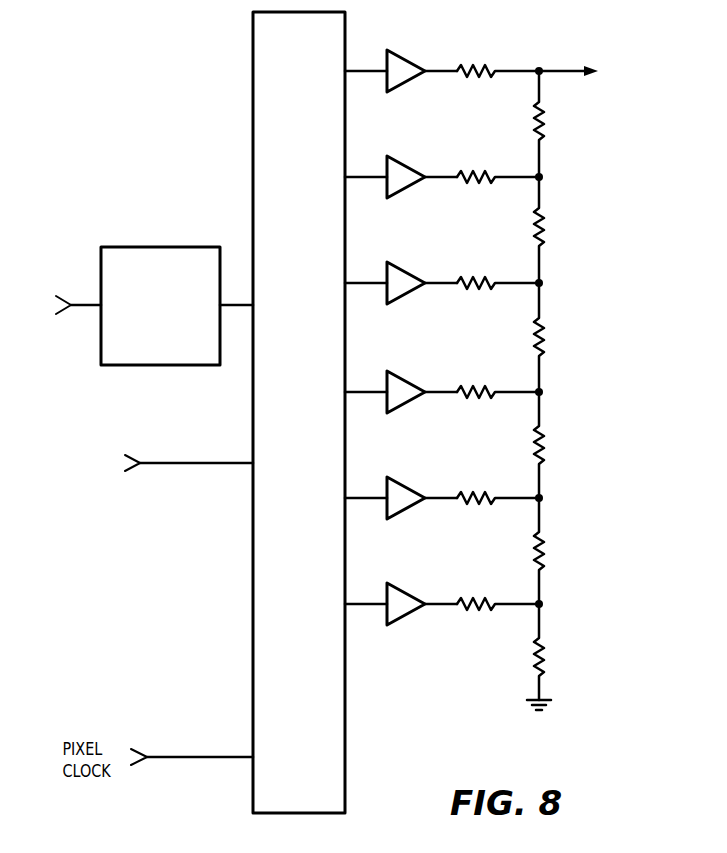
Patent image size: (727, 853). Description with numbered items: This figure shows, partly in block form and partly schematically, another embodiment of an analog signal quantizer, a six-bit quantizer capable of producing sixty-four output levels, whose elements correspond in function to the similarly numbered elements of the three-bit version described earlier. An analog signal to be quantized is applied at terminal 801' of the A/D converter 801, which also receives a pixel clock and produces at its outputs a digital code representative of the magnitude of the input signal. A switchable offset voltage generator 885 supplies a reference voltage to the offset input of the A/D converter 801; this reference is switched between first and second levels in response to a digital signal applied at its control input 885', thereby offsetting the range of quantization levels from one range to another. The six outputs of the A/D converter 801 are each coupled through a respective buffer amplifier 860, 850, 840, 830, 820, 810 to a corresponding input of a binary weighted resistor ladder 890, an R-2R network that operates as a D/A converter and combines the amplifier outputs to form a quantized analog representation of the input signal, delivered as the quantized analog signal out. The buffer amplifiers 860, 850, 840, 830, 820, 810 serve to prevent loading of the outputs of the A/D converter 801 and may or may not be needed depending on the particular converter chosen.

The A/D converter 801 is at (261, 412).
The analog signal input terminal 801' is at (154, 469).
The switchable offset voltage generator 885 is at (177, 329).
The control input 885' is at (65, 307).
The buffer amplifier 860 is at (404, 83).
The buffer amplifier 850 is at (404, 189).
The buffer amplifier 840 is at (404, 295).
The buffer amplifier 830 is at (404, 404).
The buffer amplifier 820 is at (404, 510).
The buffer amplifier 810 is at (406, 616).
The binary weighted resistor ladder 890 is at (478, 231).